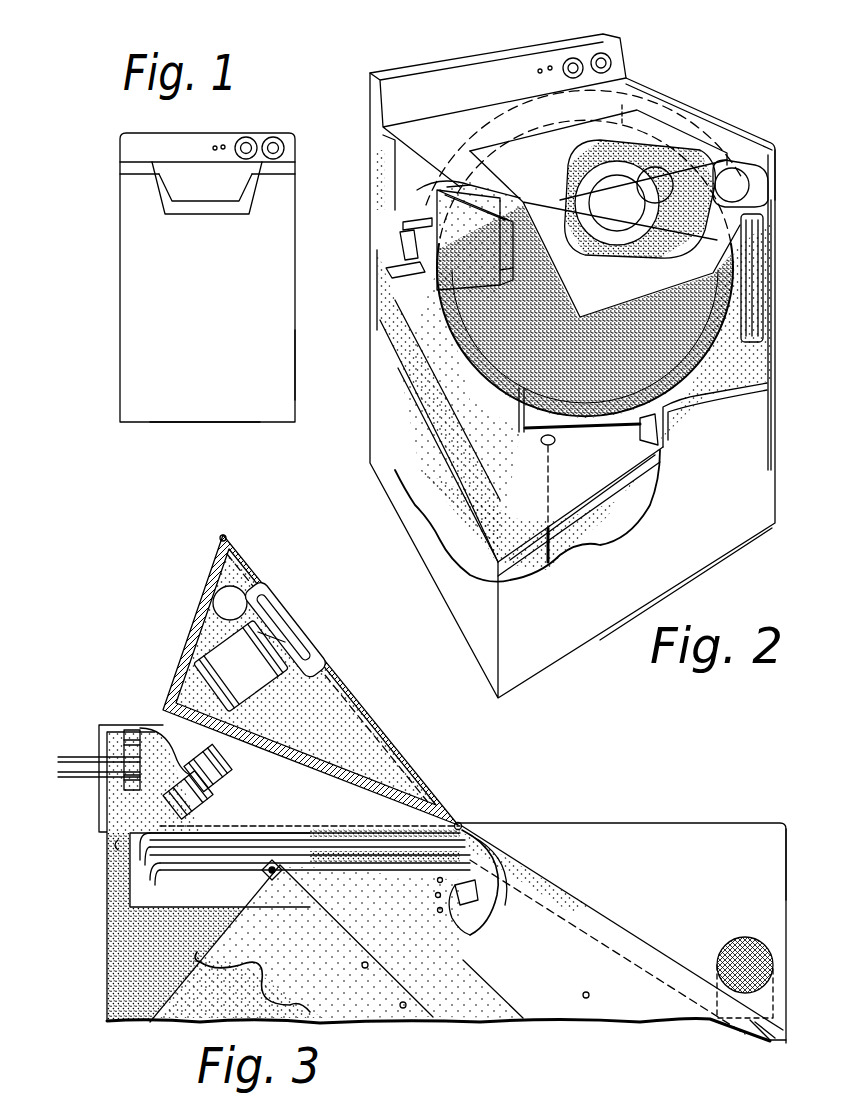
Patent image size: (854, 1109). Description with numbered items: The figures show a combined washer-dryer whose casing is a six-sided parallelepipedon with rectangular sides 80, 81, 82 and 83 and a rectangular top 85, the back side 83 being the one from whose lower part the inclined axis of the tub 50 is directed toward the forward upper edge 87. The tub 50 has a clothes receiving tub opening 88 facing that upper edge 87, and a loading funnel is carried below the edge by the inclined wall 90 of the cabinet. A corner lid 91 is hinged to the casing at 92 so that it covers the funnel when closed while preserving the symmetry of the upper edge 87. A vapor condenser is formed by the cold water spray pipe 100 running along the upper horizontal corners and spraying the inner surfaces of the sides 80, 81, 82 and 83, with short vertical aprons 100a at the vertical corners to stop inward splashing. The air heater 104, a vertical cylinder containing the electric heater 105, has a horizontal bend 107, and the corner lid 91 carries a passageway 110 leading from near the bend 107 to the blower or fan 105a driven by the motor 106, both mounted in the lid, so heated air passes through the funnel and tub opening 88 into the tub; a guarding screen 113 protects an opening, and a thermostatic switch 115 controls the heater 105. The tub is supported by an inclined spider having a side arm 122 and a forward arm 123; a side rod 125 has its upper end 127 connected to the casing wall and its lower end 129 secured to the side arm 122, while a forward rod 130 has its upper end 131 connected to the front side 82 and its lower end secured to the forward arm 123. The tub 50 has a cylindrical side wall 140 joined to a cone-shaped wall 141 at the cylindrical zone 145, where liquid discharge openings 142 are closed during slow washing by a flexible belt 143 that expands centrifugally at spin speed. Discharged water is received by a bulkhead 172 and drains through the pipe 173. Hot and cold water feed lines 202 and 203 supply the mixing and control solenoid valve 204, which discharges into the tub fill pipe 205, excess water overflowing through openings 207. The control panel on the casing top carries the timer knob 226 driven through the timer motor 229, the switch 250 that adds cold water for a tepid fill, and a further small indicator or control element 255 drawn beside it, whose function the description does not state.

In FIG. 2, the tub 50 is at (490, 385).
In FIG. 3, the tub 50 is at (230, 912).
In FIG. 1, the casing side 80 is at (119, 296).
In FIG. 2, the casing side 80 is at (460, 600).
In FIG. 1, the casing side wall 81 is at (296, 370).
In FIG. 2, the casing side wall 81 is at (757, 340).
In FIG. 1, the front side of the casing 82 is at (204, 409).
In FIG. 2, the front side of the casing 82 is at (718, 540).
In FIG. 2, the back side of the casing 83 is at (385, 325).
In FIG. 1, the top 85 is at (132, 161).
In FIG. 2, the top 85 is at (690, 110).
In FIG. 3, the top 85 is at (670, 822).
In FIG. 2, the upper edge 87 is at (760, 142).
In FIG. 3, the upper edge 87 is at (787, 822).
In FIG. 2, the tub opening 88 is at (530, 180).
In FIG. 3, the tub opening 88 is at (463, 955).
In FIG. 3, the inclined wall 90 is at (512, 858).
In FIG. 1, the corner lid 91 is at (215, 188).
In FIG. 2, the corner lid 91 is at (640, 120).
In FIG. 3, the corner lid 91 is at (282, 770).
In FIG. 2, the hinge 92 is at (612, 112).
In FIG. 3, the hinge 92 is at (462, 822).
In FIG. 2, the cold water spray pipe 100 is at (478, 212).
In FIG. 3, the cold water spray pipe 100 is at (130, 862).
In FIG. 2, the vertical aprons 100a is at (500, 272).
In FIG. 3, the vertical aprons 100a is at (130, 885).
In FIG. 2, the air heater 104 is at (758, 210).
In FIG. 3, the air heater 104 is at (762, 1005).
In FIG. 2, the electric heater 105 is at (755, 276).
In FIG. 3, the blower or fan 105a is at (272, 612).
In FIG. 2, the motor 106 is at (625, 160).
In FIG. 3, the motor 106 is at (207, 658).
In FIG. 2, the horizontal bend 107 is at (645, 159).
In FIG. 2, the passageway 110 is at (680, 175).
In FIG. 3, the passageway 110 is at (238, 598).
In FIG. 3, the guarding screen 113 is at (742, 950).
In FIG. 1, the thermostatic switch 115 is at (278, 148).
In FIG. 2, the thermostatic switch 115 is at (612, 62).
In FIG. 3, the thermostatic switch 115 is at (218, 777).
In FIG. 2, the side arm 122 is at (405, 270).
In FIG. 2, the forward arm 123 is at (530, 416).
In FIG. 2, the side rod 125 is at (402, 224).
In FIG. 2, the upper end of side rod 127 is at (458, 185).
In FIG. 2, the lower end of side rod 129 is at (400, 252).
In FIG. 2, the forward rod 130 is at (588, 433).
In FIG. 2, the upper end of forward rod 131 is at (660, 441).
In FIG. 2, the cylindrical side wall 140 is at (462, 348).
In FIG. 3, the cylindrical side wall 140 is at (130, 1000).
In FIG. 2, the cone-shaped side wall 141 is at (690, 375).
In FIG. 3, the cone-shaped side wall 141 is at (375, 878).
In FIG. 3, the liquid discharge openings 142 is at (370, 965).
In FIG. 3, the flexible belt 143 is at (262, 875).
In FIG. 3, the cylindrical zone 145 is at (420, 1003).
In FIG. 2, the bulkhead 172 is at (490, 512).
In FIG. 2, the drain pipe 173 is at (552, 552).
In FIG. 3, the hot water feed line 202 is at (68, 780).
In FIG. 3, the cold water feed line 203 is at (72, 754).
In FIG. 3, the mixing and control solenoid valve 204 is at (126, 738).
In FIG. 3, the tub fill pipe 205 is at (486, 930).
In FIG. 3, the overflow openings 207 is at (470, 900).
In FIG. 1, the knob 226 is at (268, 120).
In FIG. 2, the knob 226 is at (575, 58).
In FIG. 3, the knob 226 is at (227, 790).
In FIG. 3, the timer motor 229 is at (160, 740).
In FIG. 1, the switch 250 is at (224, 143).
In FIG. 2, the switch 250 is at (550, 72).
In FIG. 1, the indicator light 255 is at (212, 148).
In FIG. 2, the indicator light 255 is at (538, 73).